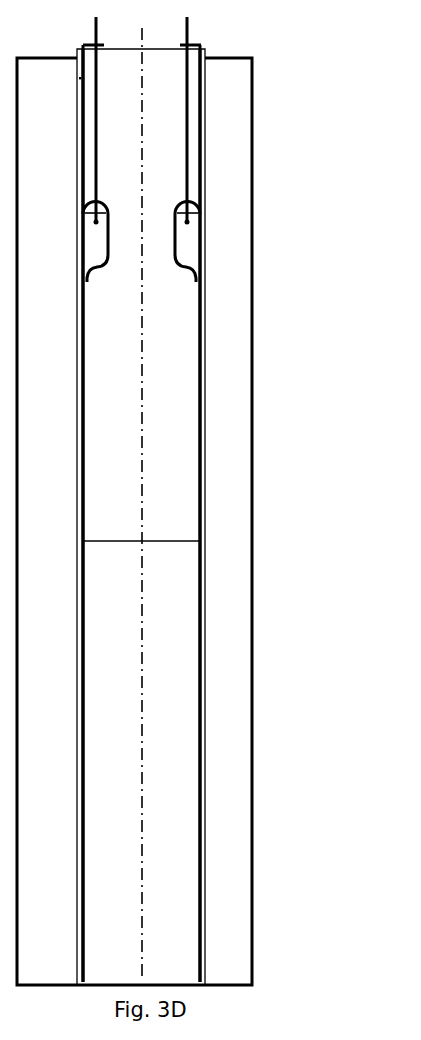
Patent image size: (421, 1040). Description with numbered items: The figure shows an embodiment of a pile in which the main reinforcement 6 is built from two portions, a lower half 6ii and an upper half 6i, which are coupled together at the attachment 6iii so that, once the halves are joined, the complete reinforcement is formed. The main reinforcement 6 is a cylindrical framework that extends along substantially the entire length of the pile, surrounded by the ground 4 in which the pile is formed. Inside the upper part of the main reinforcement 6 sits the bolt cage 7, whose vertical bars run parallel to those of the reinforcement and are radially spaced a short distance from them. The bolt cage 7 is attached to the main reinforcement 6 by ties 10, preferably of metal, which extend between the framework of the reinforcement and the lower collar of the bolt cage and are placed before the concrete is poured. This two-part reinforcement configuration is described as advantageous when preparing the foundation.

The formation / borehole wall 4 is at (230, 840).
The main reinforcement 6 is at (203, 305).
The upper half 6i is at (214, 418).
The lower half 6ii is at (215, 701).
The attachment 6iii is at (152, 540).
The bolt cage 7 is at (188, 138).
The ties 10 is at (178, 243).